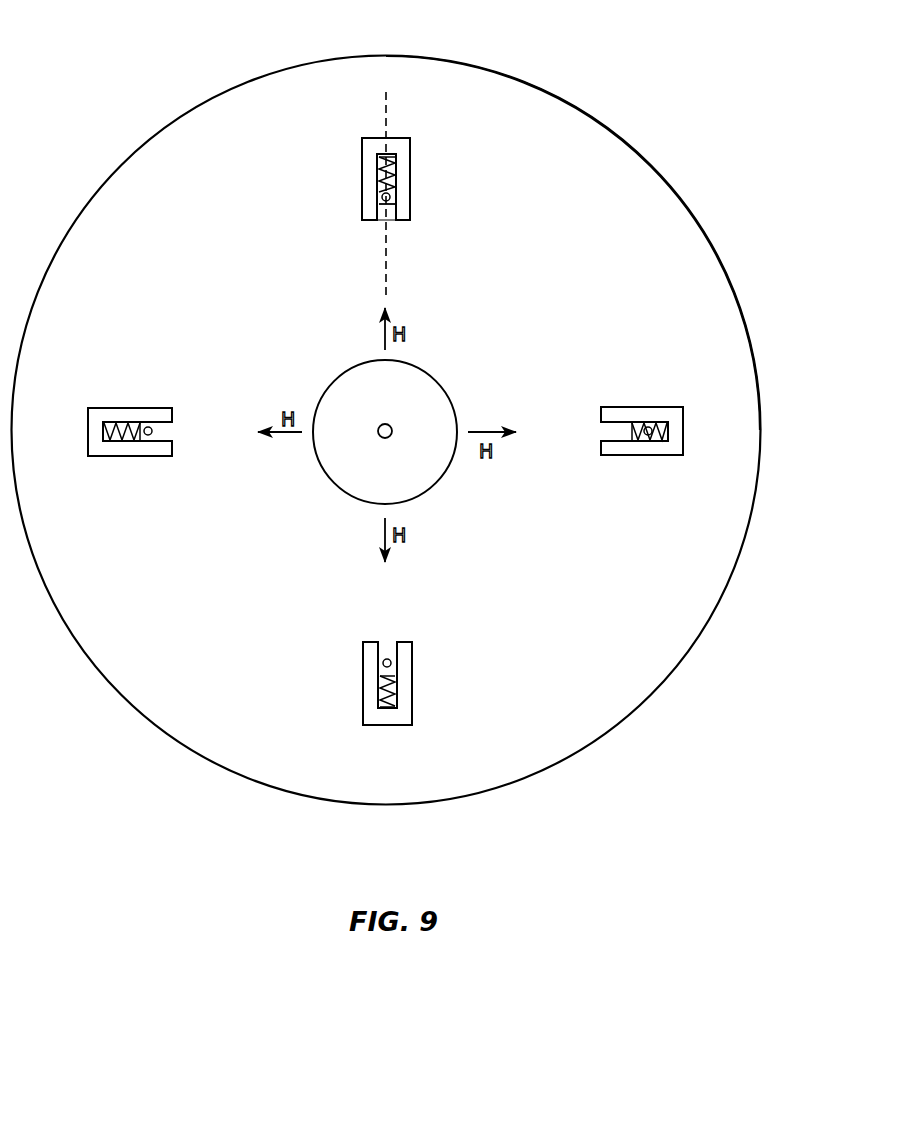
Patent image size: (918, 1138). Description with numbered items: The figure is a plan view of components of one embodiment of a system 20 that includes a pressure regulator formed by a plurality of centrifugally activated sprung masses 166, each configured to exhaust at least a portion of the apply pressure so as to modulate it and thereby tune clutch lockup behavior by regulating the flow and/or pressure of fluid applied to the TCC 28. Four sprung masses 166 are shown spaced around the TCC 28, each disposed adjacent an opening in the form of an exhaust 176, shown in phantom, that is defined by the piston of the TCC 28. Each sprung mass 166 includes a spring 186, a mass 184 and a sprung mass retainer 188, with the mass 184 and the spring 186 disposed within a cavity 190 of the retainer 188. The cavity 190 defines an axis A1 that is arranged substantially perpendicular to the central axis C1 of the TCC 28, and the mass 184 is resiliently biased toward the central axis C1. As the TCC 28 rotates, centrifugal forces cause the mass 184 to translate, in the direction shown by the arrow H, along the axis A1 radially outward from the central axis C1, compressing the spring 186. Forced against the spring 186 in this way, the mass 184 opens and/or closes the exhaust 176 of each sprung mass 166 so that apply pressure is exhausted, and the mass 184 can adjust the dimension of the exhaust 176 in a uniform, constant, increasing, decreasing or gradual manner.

The system 20 is at (176, 56).
The TCC 28 is at (667, 269).
The sprung mass 166 is at (338, 162).
The exhaust 176 is at (392, 198).
The mass 184 is at (390, 206).
The spring 186 is at (390, 170).
The sprung mass retainer 188 is at (418, 148).
The cavity 190 is at (378, 229).
The central axis C1 is at (378, 430).
The axis A1 is at (386, 266).